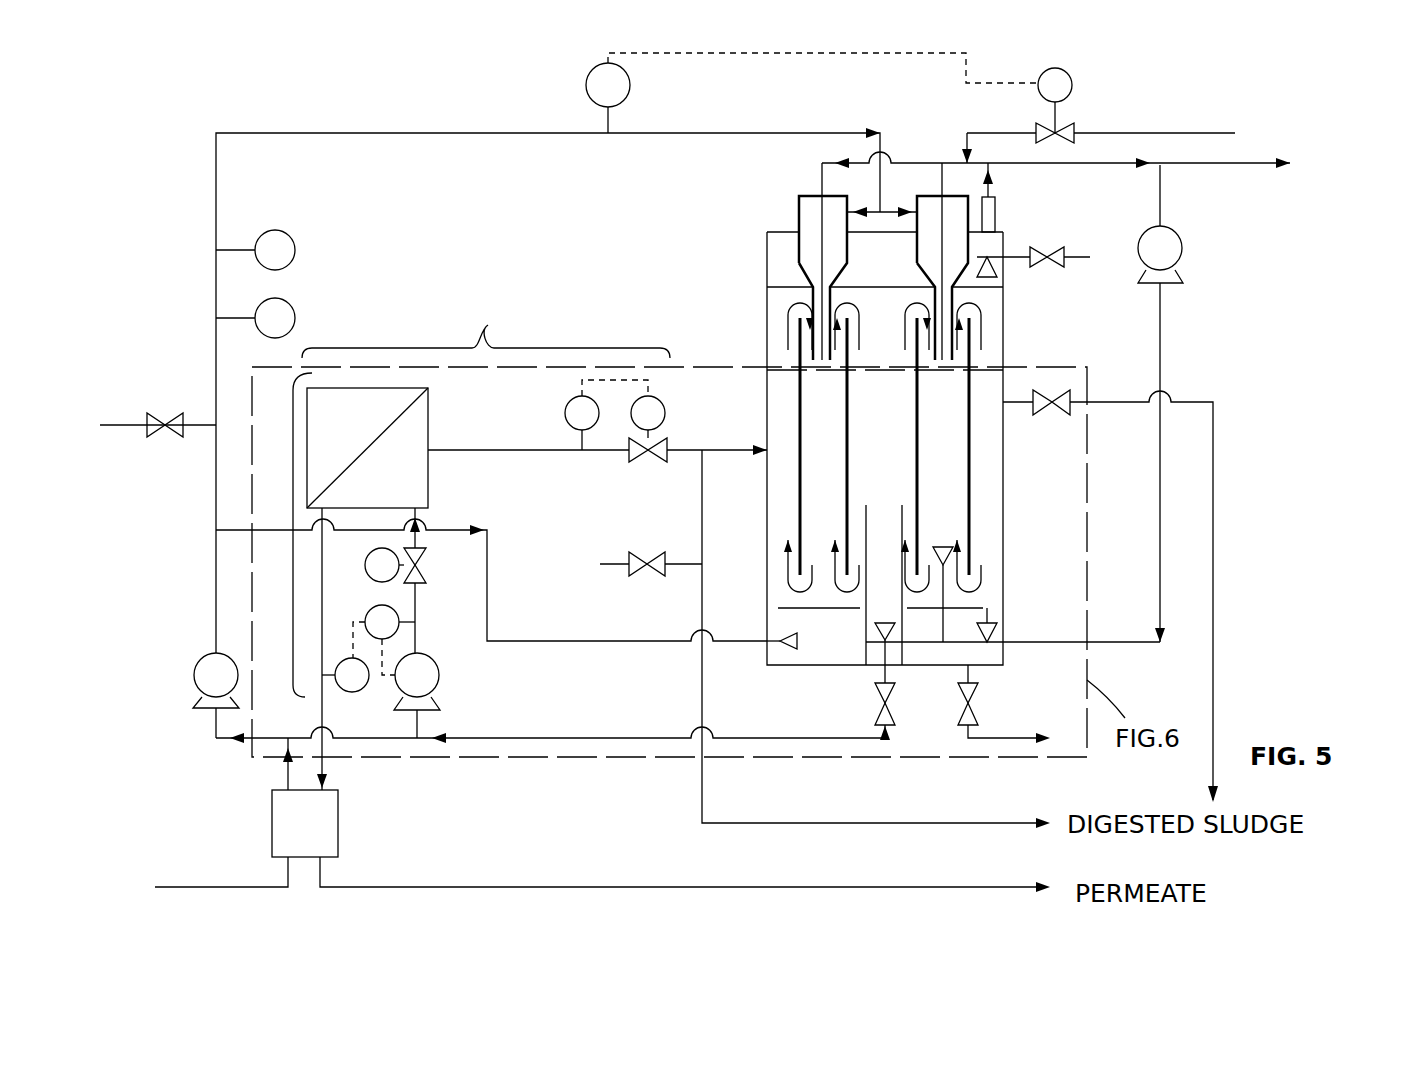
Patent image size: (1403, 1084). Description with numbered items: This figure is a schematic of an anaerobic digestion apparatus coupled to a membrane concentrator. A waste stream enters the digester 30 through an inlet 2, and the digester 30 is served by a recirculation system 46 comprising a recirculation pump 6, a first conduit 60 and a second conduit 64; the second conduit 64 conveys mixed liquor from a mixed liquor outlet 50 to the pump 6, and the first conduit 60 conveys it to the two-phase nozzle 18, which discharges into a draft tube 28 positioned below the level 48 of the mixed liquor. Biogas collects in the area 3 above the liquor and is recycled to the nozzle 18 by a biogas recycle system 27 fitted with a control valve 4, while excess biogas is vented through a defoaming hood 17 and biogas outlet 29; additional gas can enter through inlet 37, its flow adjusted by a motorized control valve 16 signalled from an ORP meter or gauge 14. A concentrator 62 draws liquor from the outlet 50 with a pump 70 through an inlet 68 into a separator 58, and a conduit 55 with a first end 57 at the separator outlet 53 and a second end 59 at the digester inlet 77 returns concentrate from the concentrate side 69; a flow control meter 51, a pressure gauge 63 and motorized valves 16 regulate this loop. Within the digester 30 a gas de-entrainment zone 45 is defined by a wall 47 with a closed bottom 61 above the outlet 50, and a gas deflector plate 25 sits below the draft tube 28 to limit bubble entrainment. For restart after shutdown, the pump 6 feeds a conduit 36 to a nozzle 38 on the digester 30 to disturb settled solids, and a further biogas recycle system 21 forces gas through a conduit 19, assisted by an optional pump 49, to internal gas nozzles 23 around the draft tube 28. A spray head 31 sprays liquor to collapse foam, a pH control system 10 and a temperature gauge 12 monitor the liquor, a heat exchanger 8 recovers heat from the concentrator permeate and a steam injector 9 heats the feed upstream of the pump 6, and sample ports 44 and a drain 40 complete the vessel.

The inlet 2 is at (160, 887).
The biogas collection area 3 is at (778, 247).
The control valve 4 is at (1047, 415).
The recirculation pump 6 is at (205, 672).
The heat exchanger 8 is at (327, 822).
The steam injector 9 is at (280, 773).
The pH control system 10 is at (282, 304).
The temperature meter or gauge 12 is at (300, 236).
The ORP meter or gauge 14 is at (592, 80).
The motorized control valve 16 is at (1068, 125).
The defoaming hood 17 is at (995, 208).
The two-phase nozzle 18 is at (799, 218).
The conduit 19 is at (1113, 642).
The biogas recycle system 21 is at (1178, 318).
The internal gas nozzles 23 is at (943, 547).
The gas deflector plate 25 is at (820, 609).
The biogas recycle system 27 is at (935, 142).
The draft tube 28 is at (847, 393).
The biogas outlet 29 is at (1290, 163).
The digester 30 is at (765, 560).
The spray head 31 is at (997, 276).
The conduit 36 is at (543, 641).
The inlet 37 is at (1235, 133).
The nozzle 38 is at (799, 648).
The drain 40 is at (1030, 738).
The sample port 44 is at (105, 425).
The gas de-entrainment zone 45 is at (880, 652).
The recirculation system 46 is at (220, 757).
The wall 47 is at (866, 508).
The mixed liquor level 48 is at (866, 288).
The pump 49 is at (1168, 240).
The mixed liquor outlet 50 is at (1095, 402).
The flow control meter or gauge 51 is at (370, 612).
The outlet 53 is at (428, 445).
The conduit 55 is at (520, 450).
The first end 57 is at (428, 452).
The separator 58 is at (372, 438).
The second end 59 is at (760, 453).
The first conduit 60 is at (216, 500).
The closed bottom 61 is at (893, 668).
The concentrator 62 is at (293, 478).
The pressure meter or gauge 63 is at (565, 413).
The second conduit 64 is at (553, 738).
The inlet 68 is at (420, 510).
The concentrate side 69 is at (428, 393).
The pump 70 is at (424, 672).
The inlet 77 is at (762, 447).